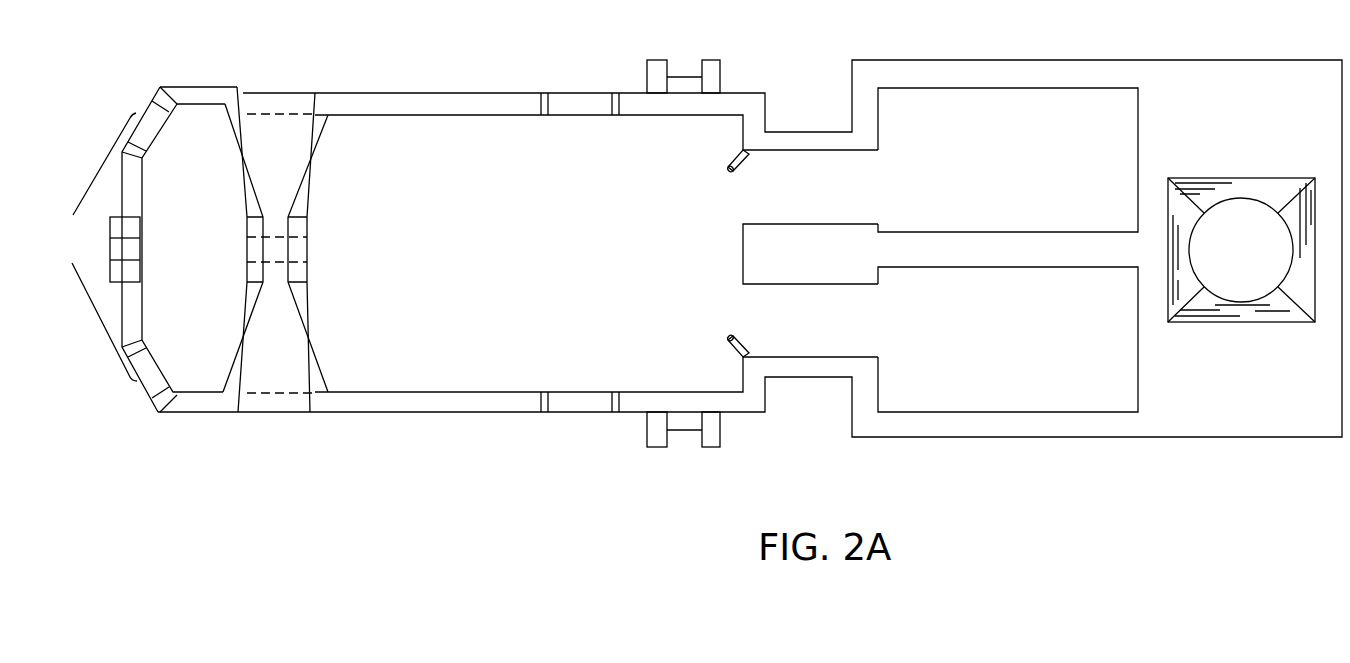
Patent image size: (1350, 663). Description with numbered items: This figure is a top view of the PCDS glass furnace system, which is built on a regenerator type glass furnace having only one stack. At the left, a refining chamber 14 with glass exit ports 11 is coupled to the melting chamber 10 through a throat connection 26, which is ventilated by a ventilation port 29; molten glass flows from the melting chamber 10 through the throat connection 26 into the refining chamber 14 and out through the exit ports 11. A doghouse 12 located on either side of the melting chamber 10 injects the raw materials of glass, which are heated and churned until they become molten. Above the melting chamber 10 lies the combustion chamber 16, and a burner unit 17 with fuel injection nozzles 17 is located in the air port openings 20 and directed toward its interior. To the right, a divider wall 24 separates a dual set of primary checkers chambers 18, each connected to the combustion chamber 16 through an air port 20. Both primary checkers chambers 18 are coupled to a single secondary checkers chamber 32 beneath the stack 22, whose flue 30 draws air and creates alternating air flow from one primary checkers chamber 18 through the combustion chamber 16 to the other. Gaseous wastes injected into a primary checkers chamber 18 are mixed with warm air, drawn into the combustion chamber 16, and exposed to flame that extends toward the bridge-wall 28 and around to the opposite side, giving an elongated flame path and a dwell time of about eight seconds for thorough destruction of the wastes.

The melting chamber 10 is at (605, 346).
The glass exit ports 11 is at (108, 252).
The doghouse 12 is at (685, 67).
The refining chamber 14 is at (178, 253).
The combustion chamber 16 is at (603, 207).
The burner unit 17 is at (734, 160).
The primary checkers chambers 18 is at (993, 170).
The air port openings 20 is at (843, 208).
The stack 22 is at (1229, 262).
The divider wall 24 is at (796, 265).
The throat connection 26 is at (283, 250).
The bridge-wall 28 is at (315, 157).
The ventilation port 29 is at (270, 103).
The flue 30 is at (1180, 210).
The secondary checkers chamber 32 is at (1167, 263).